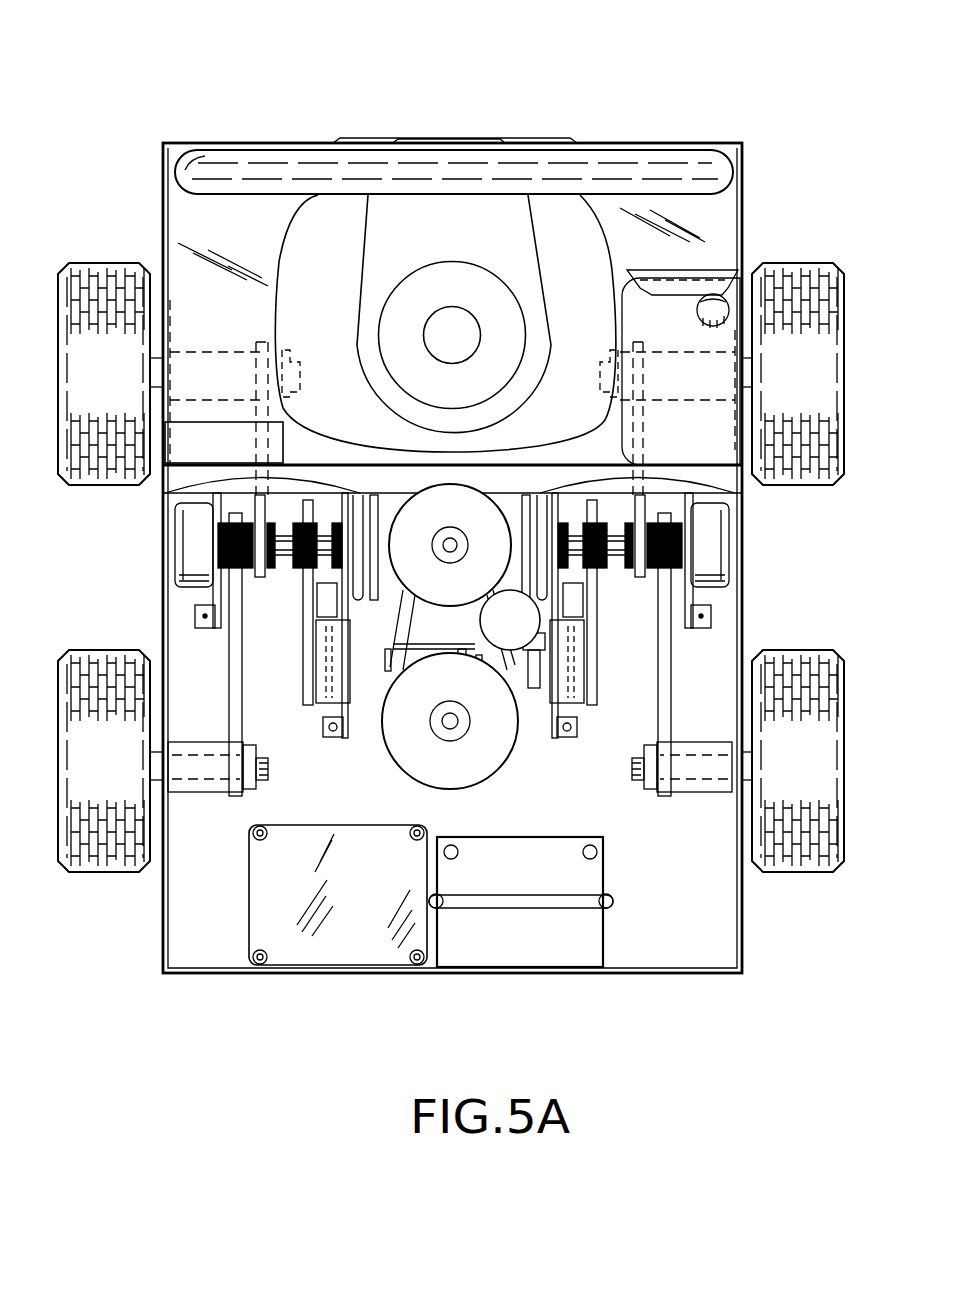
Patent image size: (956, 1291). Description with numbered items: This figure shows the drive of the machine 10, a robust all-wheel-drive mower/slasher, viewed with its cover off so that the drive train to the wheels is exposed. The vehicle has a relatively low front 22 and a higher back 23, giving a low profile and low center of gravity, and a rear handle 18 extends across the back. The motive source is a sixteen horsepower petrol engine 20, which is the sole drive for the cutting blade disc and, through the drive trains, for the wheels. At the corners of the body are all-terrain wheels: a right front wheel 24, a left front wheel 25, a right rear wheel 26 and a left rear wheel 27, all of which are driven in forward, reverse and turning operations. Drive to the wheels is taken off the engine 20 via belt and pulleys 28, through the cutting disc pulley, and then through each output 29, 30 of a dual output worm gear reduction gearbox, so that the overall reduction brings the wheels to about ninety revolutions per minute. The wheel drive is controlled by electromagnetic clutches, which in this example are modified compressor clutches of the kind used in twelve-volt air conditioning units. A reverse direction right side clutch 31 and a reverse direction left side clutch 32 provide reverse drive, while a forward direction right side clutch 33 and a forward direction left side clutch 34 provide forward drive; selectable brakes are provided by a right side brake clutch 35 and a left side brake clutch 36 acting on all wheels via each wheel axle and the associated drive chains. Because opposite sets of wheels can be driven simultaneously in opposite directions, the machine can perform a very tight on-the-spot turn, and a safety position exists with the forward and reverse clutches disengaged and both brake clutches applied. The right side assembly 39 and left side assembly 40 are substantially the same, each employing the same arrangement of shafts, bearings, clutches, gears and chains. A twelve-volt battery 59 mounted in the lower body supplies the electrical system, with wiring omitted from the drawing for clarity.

The machine 10 is at (722, 96).
The rear handle 18 is at (630, 148).
The petrol engine 20 is at (456, 215).
The front 22 is at (353, 1034).
The back 23 is at (316, 100).
The right front wheel 24 is at (95, 655).
The left front wheel 25 is at (800, 652).
The right rear wheel 26 is at (122, 270).
The left rear wheel 27 is at (790, 268).
The belt and pulleys 28 is at (466, 803).
The output 29 is at (384, 662).
The output 30 is at (524, 672).
The reverse direction right side clutch 31 is at (332, 680).
The reverse direction left side clutch 32 is at (575, 700).
The forward direction right side clutch 33 is at (165, 495).
The forward direction left side clutch 34 is at (737, 493).
The right side brake clutch 35 is at (195, 532).
The left side brake clutch 36 is at (705, 552).
The right side assembly 39 is at (287, 708).
The left side assembly 40 is at (628, 658).
The 12V battery 59 is at (455, 952).